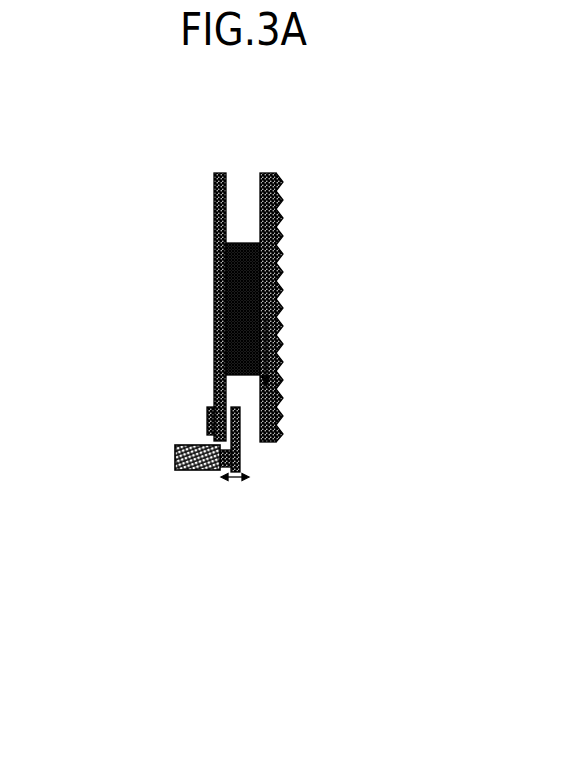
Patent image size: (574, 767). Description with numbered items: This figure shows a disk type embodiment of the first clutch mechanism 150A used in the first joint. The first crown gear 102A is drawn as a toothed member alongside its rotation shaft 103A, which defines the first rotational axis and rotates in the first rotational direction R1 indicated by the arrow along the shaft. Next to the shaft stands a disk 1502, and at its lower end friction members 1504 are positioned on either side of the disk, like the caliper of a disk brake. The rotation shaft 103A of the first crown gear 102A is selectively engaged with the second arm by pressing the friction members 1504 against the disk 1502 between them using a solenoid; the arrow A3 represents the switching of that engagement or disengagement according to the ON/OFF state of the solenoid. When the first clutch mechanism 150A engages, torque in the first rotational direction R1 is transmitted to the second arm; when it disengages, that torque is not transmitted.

The first clutch mechanism 150A is at (229, 104).
The rotation shaft 103A is at (243, 242).
The disk 1502 is at (214, 296).
The friction members 1504 is at (233, 408).
The first rotational direction R1 is at (277, 347).
The first crown gear 102A is at (264, 442).
The arrow indicating solenoid ON/OFF switching A3 is at (233, 480).